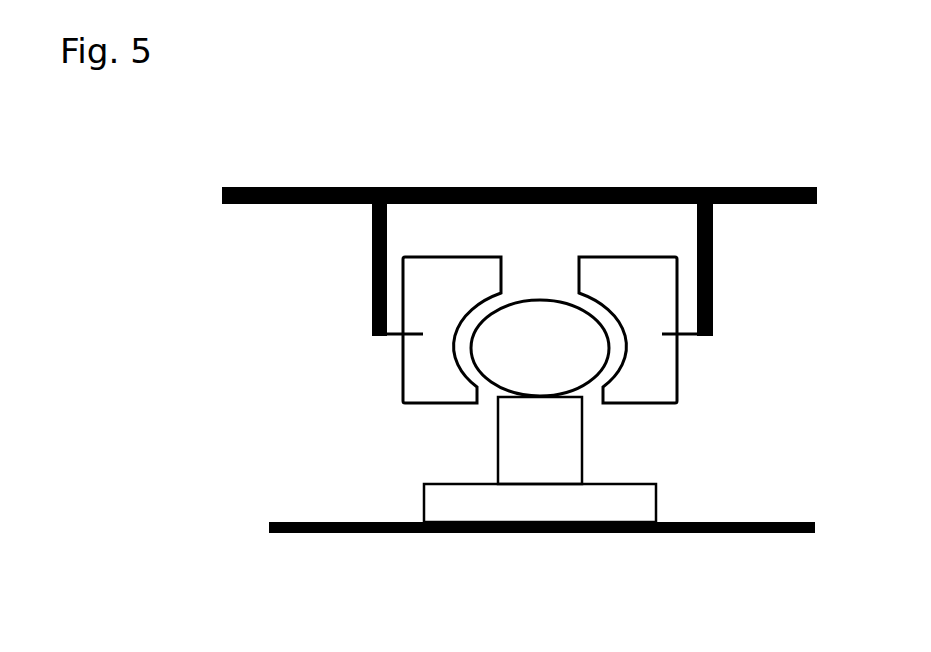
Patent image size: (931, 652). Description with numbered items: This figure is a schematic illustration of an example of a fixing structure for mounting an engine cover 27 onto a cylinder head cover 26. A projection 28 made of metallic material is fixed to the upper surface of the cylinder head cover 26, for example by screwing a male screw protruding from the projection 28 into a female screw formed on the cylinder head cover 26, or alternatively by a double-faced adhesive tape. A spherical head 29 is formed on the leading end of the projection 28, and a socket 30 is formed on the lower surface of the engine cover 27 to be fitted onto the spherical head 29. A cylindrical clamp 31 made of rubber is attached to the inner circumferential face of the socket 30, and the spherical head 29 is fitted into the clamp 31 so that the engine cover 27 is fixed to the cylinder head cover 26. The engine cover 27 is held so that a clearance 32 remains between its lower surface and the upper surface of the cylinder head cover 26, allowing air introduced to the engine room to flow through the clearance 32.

The cylinder head cover 26 is at (743, 535).
The engine cover 27 is at (768, 187).
The projection 28 is at (705, 458).
The spherical head 29 is at (597, 358).
The socket 30 is at (372, 263).
The clamp 31 is at (663, 289).
The clearance 32 is at (313, 397).